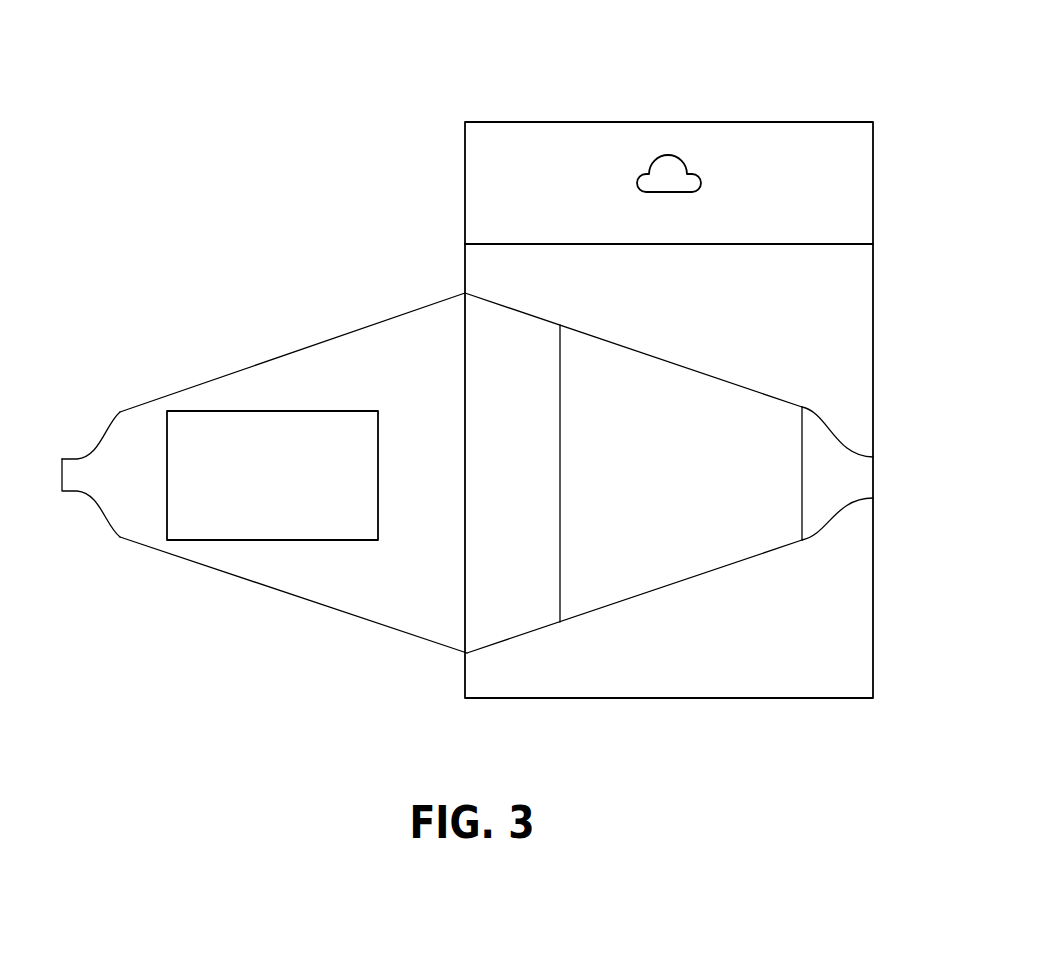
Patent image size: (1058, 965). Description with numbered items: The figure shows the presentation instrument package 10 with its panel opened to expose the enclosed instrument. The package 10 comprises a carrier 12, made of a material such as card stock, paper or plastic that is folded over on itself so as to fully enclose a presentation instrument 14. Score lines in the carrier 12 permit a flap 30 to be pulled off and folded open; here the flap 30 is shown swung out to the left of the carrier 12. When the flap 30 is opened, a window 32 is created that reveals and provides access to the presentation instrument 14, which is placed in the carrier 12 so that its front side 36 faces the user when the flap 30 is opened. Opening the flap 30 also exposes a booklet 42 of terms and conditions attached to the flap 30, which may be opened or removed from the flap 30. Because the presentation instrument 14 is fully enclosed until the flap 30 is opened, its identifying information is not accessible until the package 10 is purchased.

The presentation instrument package 10 is at (737, 100).
The carrier 12 is at (840, 315).
The presentation instrument 14 is at (773, 407).
The flap 30 is at (268, 572).
The window 32 is at (505, 323).
The front side 36 is at (690, 553).
The booklet 42 is at (187, 527).